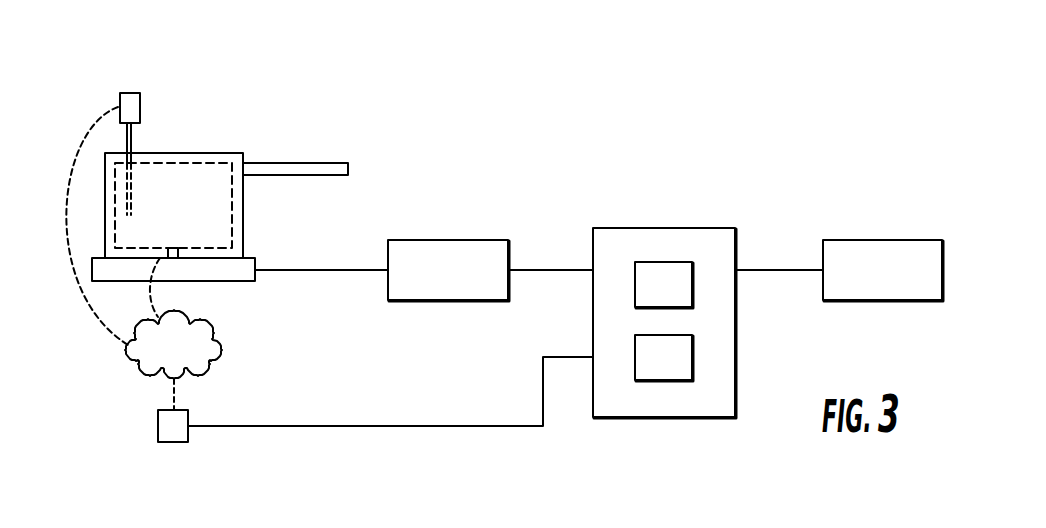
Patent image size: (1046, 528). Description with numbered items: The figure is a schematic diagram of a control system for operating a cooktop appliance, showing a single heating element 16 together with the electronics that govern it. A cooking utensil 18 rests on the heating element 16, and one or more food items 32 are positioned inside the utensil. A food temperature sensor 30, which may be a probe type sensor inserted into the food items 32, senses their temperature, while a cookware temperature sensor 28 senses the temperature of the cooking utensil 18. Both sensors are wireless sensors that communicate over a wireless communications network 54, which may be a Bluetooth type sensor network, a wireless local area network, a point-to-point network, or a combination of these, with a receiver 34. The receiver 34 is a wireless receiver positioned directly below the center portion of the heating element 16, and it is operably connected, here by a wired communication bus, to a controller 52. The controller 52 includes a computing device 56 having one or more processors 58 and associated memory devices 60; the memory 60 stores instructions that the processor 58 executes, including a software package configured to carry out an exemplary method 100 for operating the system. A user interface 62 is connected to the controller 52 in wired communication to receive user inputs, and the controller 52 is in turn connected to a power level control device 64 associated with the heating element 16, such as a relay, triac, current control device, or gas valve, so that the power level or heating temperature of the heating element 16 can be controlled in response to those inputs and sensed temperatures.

The method 100 is at (569, 151).
The heating element 16 is at (247, 267).
The cooking utensil 18 is at (203, 152).
The cookware temperature sensor 28 is at (180, 256).
The food temperature sensor 30 is at (130, 95).
The food items 32 is at (151, 162).
The receiver 34 is at (172, 436).
The controller 52 is at (685, 197).
The wireless communications network 54 is at (148, 360).
The computing device 56 is at (698, 301).
The processor 58 is at (677, 297).
The memory device 60 is at (677, 370).
The user interface 62 is at (877, 245).
The power level control device 64 is at (448, 243).